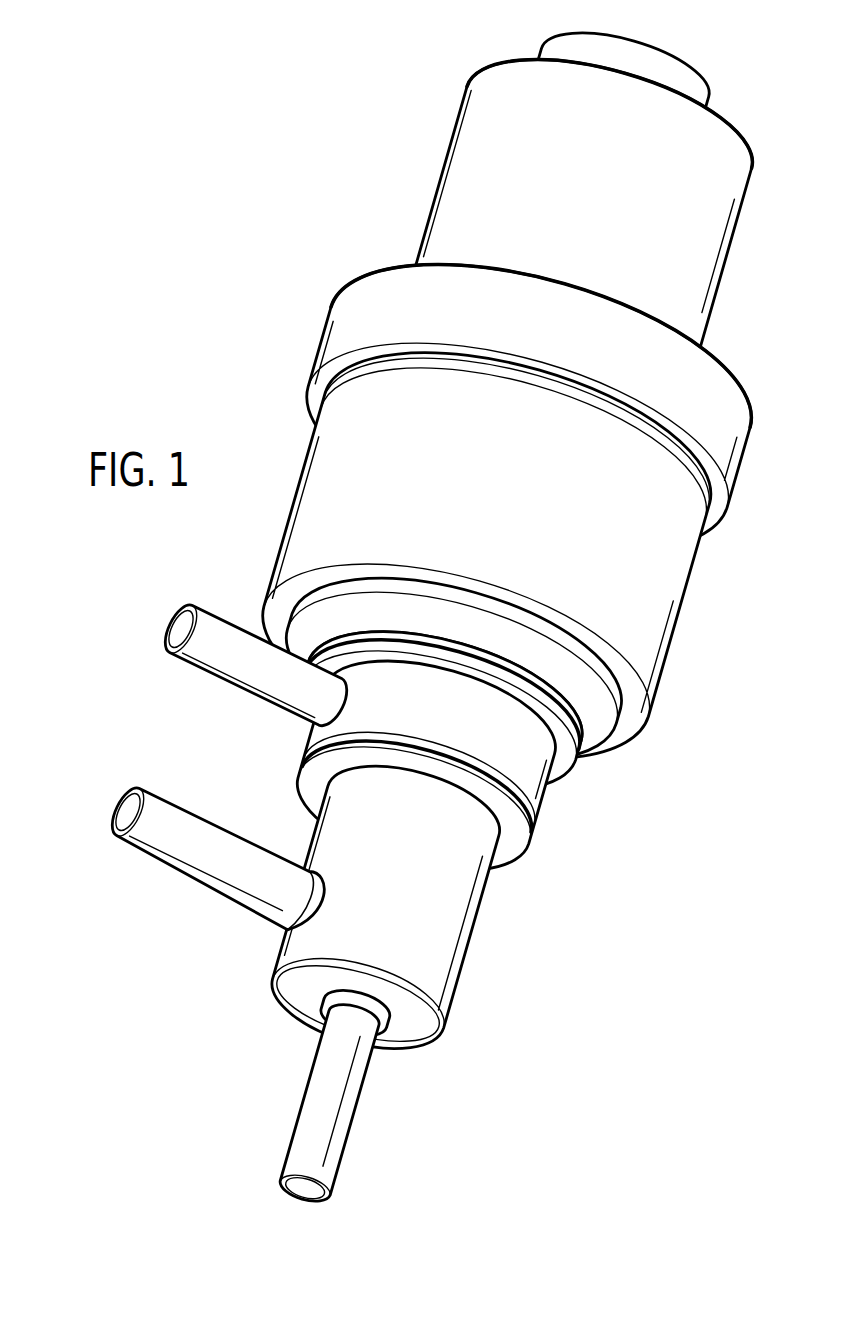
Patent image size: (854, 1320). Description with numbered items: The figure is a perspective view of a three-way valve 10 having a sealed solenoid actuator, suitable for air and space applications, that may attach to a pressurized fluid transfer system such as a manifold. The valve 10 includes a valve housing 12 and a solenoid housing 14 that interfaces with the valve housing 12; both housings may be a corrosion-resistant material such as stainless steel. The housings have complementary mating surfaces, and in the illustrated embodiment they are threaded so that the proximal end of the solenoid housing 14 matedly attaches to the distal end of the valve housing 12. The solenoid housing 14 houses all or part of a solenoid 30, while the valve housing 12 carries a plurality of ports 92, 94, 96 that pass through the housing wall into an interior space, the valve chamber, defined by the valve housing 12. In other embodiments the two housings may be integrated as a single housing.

The three-way valve 10 is at (221, 157).
The valve housing 12 is at (471, 932).
The solenoid housing 14 is at (678, 613).
The solenoid 30 is at (441, 177).
The port 92 is at (301, 1205).
The port 94 is at (116, 806).
The port 96 is at (168, 620).